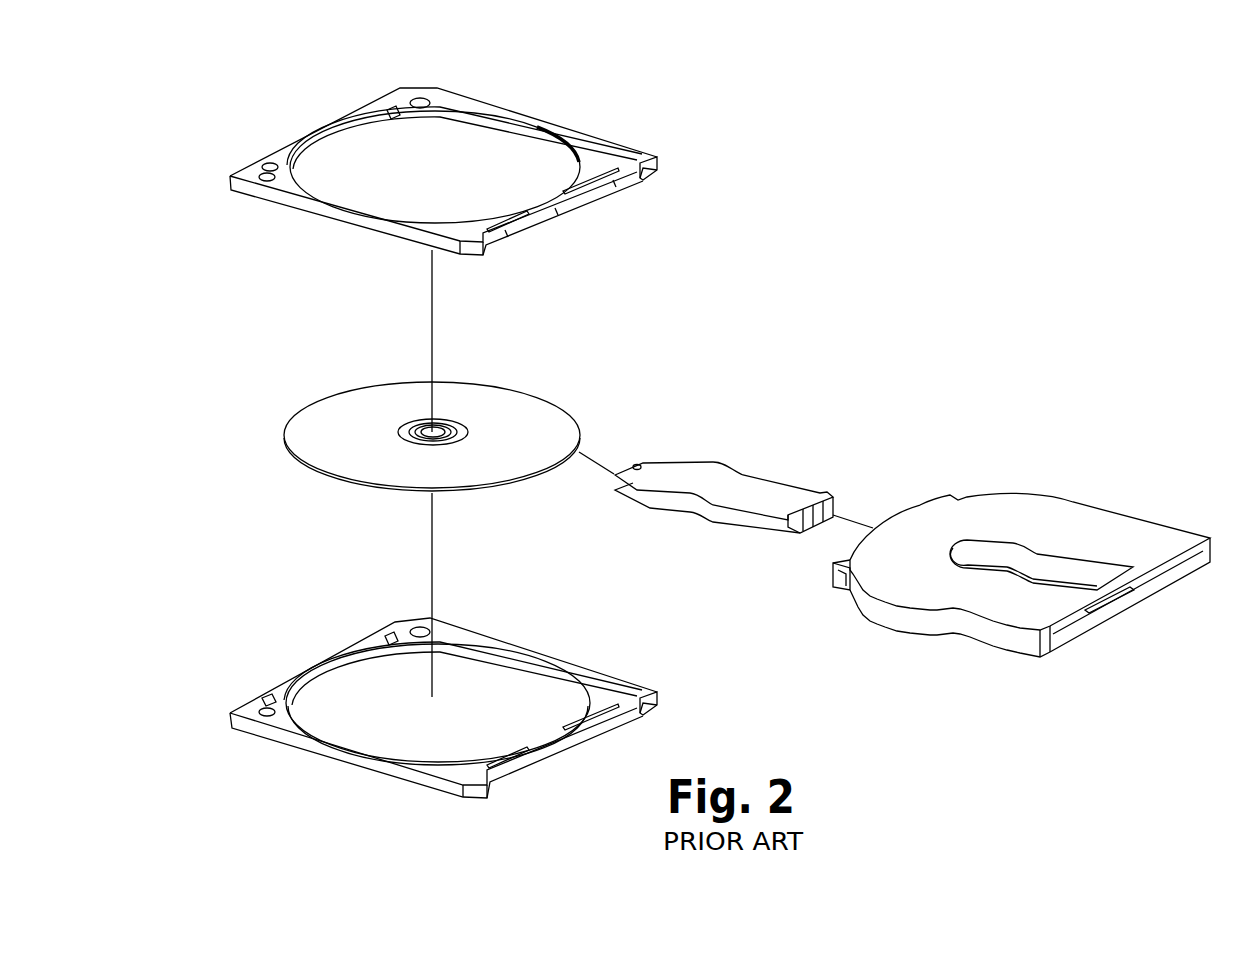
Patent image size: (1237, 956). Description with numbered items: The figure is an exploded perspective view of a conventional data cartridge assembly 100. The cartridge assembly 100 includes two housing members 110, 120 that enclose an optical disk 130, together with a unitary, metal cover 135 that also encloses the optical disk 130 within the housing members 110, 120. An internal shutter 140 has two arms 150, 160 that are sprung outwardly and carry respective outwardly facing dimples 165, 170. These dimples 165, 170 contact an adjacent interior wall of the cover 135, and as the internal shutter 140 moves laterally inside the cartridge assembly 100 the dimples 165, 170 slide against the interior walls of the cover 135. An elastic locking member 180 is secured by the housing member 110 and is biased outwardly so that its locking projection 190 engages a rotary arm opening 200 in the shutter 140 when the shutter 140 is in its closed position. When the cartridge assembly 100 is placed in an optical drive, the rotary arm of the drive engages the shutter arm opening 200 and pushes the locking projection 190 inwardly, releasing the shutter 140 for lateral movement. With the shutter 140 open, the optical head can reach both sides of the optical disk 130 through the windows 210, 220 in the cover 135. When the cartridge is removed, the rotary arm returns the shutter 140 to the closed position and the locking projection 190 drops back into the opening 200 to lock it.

The data cartridge assembly 100 is at (297, 117).
The housing member 110 is at (590, 132).
The housing member 120 is at (657, 697).
The optical disk 130 is at (507, 403).
The cover 135 is at (988, 513).
The internal shutter 140 is at (751, 490).
The arm 150 is at (723, 463).
The arm 160 is at (677, 513).
The dimple 165 is at (640, 462).
The dimple 170 is at (630, 498).
The elastic locking member 180 is at (604, 196).
The locking projection 190 is at (565, 218).
The rotary arm opening 200 is at (838, 503).
The window 210 is at (1100, 570).
The window 220 is at (1127, 597).